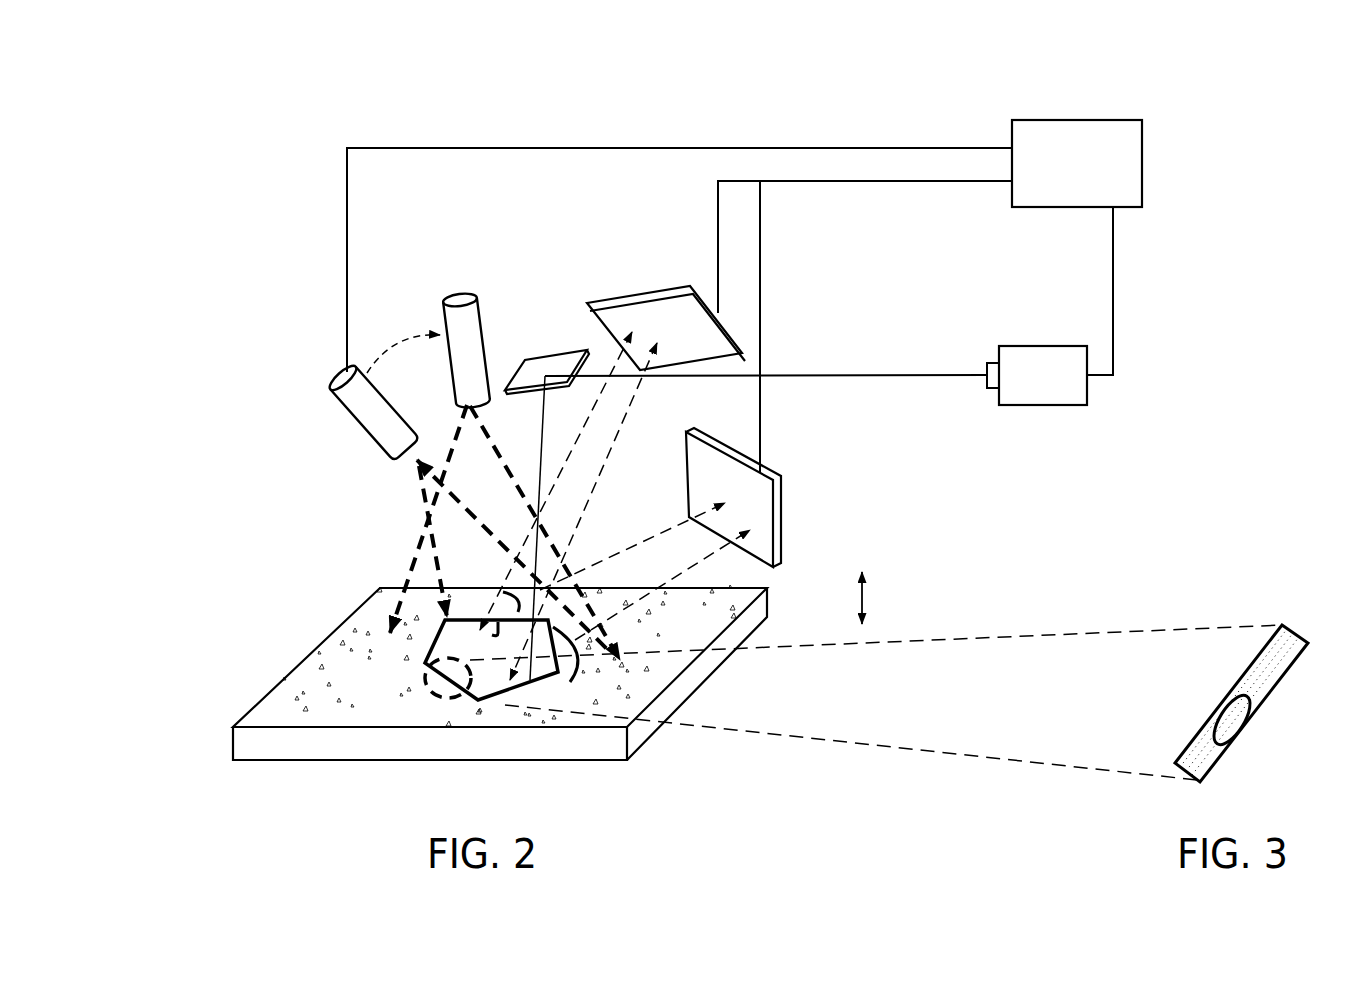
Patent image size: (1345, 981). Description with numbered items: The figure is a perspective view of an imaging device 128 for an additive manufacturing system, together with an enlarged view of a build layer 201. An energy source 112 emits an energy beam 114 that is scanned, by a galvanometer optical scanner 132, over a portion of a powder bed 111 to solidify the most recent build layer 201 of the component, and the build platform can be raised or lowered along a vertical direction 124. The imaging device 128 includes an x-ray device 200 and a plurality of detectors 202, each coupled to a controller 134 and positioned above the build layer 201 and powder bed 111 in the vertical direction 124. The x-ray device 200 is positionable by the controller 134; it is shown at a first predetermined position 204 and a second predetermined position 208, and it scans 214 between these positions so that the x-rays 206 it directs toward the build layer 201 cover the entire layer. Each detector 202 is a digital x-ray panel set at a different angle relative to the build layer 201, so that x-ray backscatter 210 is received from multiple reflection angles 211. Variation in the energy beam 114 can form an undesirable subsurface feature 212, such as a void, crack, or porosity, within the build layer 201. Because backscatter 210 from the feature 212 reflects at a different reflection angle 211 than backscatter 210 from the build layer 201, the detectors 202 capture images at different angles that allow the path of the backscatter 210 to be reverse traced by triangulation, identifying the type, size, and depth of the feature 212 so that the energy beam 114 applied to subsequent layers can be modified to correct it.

In FIG. 2, the imaging device 128 is at (254, 119).
In FIG. 2, the controller 134 is at (1099, 178).
In FIG. 2, the energy source 112 is at (1066, 389).
In FIG. 2, the energy beam 114 is at (832, 370).
In FIG. 2, the second predetermined position 208 is at (464, 292).
In FIG. 2, the scans 214 is at (407, 336).
In FIG. 2, the first predetermined position 204 is at (332, 377).
In FIG. 2, the x-ray device 200 is at (334, 418).
In FIG. 2, the x-rays 206 is at (412, 482).
In FIG. 2, the detector 202 is at (640, 290).
In FIG. 2, the galvanometer optical scanner 132 is at (552, 348).
In FIG. 2, the x-ray backscatter 210 is at (633, 400).
In FIG. 2, the vertical direction 124 is at (867, 598).
In FIG. 2, the powder bed 111 is at (690, 675).
In FIG. 2, the build layer 201 is at (495, 715).
In FIG. 3, the build layer 201 is at (1249, 661).
In FIG. 2, the reflection angle 211 is at (503, 598).
In FIG. 3, the subsurface feature 212 is at (1252, 731).